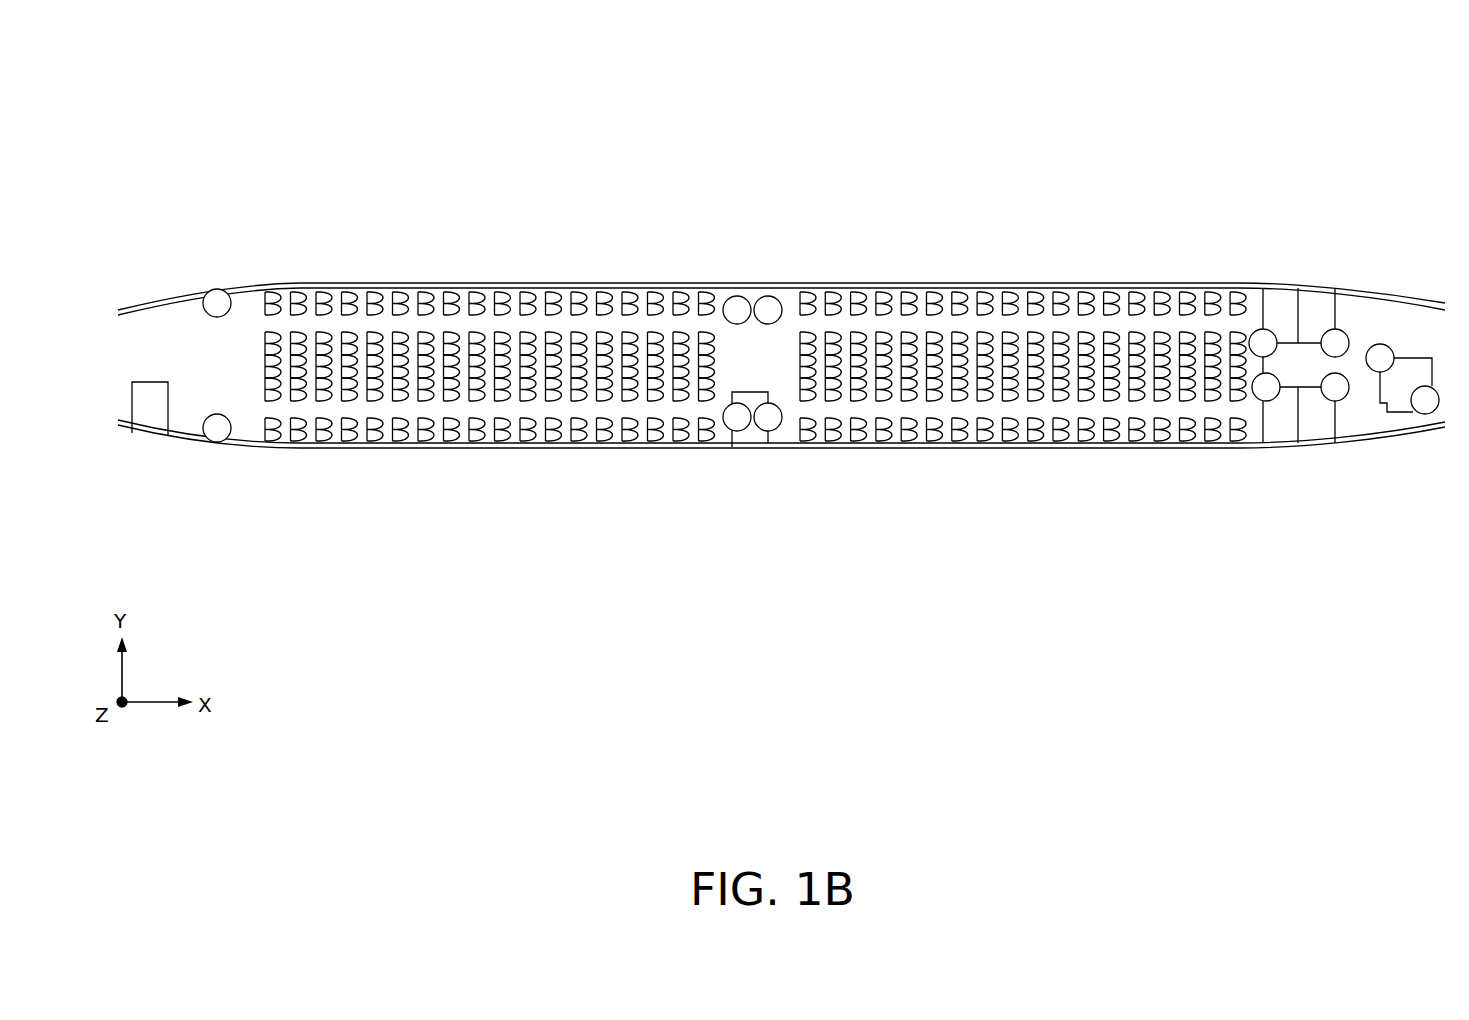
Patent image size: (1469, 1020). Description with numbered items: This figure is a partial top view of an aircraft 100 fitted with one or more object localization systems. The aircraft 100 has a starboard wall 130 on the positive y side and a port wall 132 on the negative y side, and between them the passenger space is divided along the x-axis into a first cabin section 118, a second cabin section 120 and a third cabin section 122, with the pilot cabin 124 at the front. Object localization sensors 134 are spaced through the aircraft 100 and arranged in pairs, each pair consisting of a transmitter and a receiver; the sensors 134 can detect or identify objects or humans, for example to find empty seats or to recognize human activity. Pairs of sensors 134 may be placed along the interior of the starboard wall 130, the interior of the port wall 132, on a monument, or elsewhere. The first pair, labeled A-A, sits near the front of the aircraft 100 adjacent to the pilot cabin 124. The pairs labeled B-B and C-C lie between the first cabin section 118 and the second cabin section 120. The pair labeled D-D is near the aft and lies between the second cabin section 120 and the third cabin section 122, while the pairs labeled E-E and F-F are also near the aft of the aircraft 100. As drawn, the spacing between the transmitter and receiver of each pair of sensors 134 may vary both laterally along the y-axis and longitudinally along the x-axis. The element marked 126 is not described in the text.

The aircraft 100 is at (424, 138).
The first cabin section 118 is at (508, 468).
The second cabin section 120 is at (979, 466).
The third cabin section 122 is at (1295, 279).
The pilot cabin 124 is at (146, 452).
The aft monument 126 is at (1395, 328).
The starboard wall 130 is at (780, 286).
The port wall 132 is at (722, 447).
The object localization sensors 134 is at (212, 291).